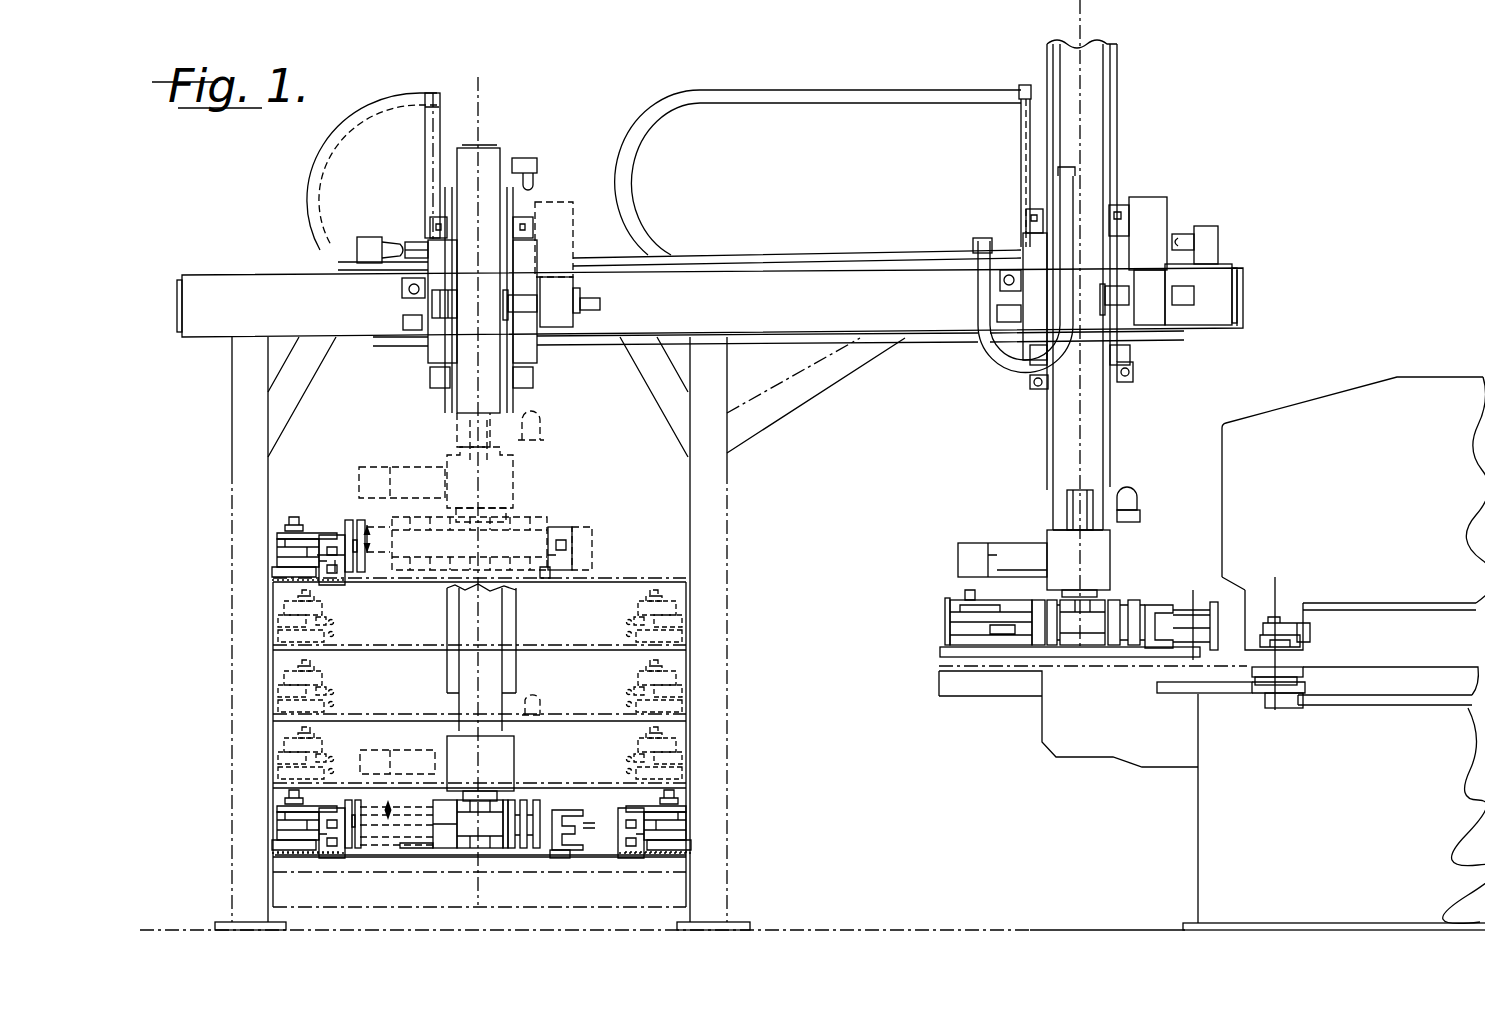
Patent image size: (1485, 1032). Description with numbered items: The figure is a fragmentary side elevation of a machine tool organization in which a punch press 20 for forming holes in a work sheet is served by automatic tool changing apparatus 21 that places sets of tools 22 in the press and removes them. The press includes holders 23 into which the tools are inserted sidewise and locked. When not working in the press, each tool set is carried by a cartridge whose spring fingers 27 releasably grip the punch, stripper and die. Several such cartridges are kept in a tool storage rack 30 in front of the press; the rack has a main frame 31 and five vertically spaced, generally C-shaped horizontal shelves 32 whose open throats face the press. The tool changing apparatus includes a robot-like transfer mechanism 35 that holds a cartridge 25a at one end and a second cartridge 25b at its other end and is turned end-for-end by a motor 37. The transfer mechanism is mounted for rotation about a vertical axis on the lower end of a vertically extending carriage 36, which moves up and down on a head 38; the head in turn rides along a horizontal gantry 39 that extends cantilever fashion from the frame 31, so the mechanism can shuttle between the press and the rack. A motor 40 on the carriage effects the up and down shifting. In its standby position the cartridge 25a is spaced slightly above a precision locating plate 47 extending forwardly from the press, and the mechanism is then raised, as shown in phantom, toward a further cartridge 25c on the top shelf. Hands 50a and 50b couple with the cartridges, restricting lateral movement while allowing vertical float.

The punch press 20 is at (1396, 388).
The tool changing apparatus 21 is at (1132, 170).
The tools 22 is at (277, 575).
The holders 23 is at (1245, 620).
The cartridge 25a is at (322, 808).
The second cartridge 25b is at (564, 519).
The cartridge 25c is at (333, 527).
The spring fingers 27 is at (593, 563).
The tool storage rack 30 is at (676, 572).
The main frame 31 is at (245, 674).
The shelves 32 is at (626, 581).
The transfer mechanism 35 is at (523, 508).
The carriage 36 is at (1105, 422).
The motor 37 is at (1020, 550).
The head 38 is at (1030, 240).
The horizontal gantry 39 is at (776, 268).
The motor 40 is at (1167, 214).
The locating plate 47 is at (1174, 696).
The hand 50a is at (342, 572).
The hand 50b is at (543, 581).